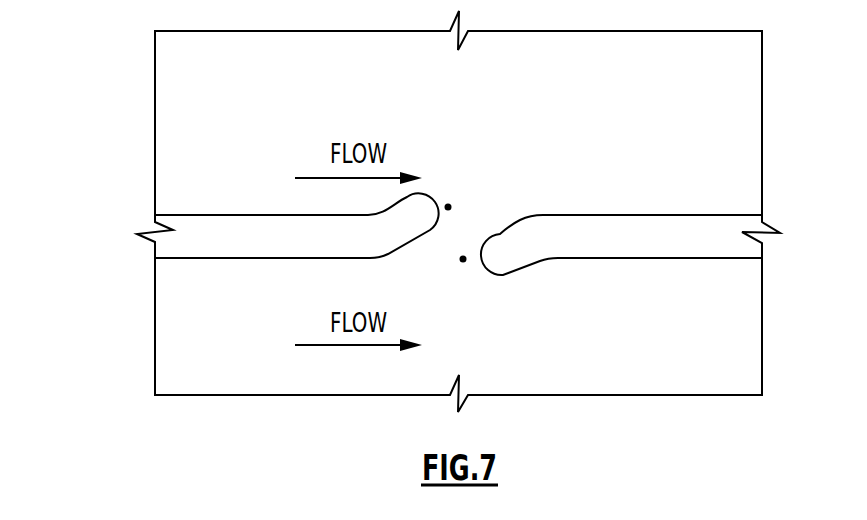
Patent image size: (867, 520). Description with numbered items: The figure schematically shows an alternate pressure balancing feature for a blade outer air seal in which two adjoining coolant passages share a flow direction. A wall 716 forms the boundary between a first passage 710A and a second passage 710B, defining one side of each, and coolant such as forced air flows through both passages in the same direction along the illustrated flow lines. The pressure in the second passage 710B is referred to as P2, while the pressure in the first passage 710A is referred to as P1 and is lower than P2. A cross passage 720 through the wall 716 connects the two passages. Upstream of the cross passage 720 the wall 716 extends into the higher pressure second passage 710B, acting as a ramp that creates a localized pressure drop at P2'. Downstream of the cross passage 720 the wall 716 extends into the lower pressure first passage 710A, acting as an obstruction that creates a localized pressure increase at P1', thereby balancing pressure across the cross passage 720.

The first passage 710A is at (170, 332).
The second passage 710B is at (170, 118).
The wall 716 is at (264, 247).
The cross passage 720 is at (457, 238).
The pressure in the first passage P1 is at (326, 372).
The pressure in the second passage P2 is at (327, 78).
The localized pressure increase P1' is at (488, 288).
The localized pressure drop P2' is at (470, 181).